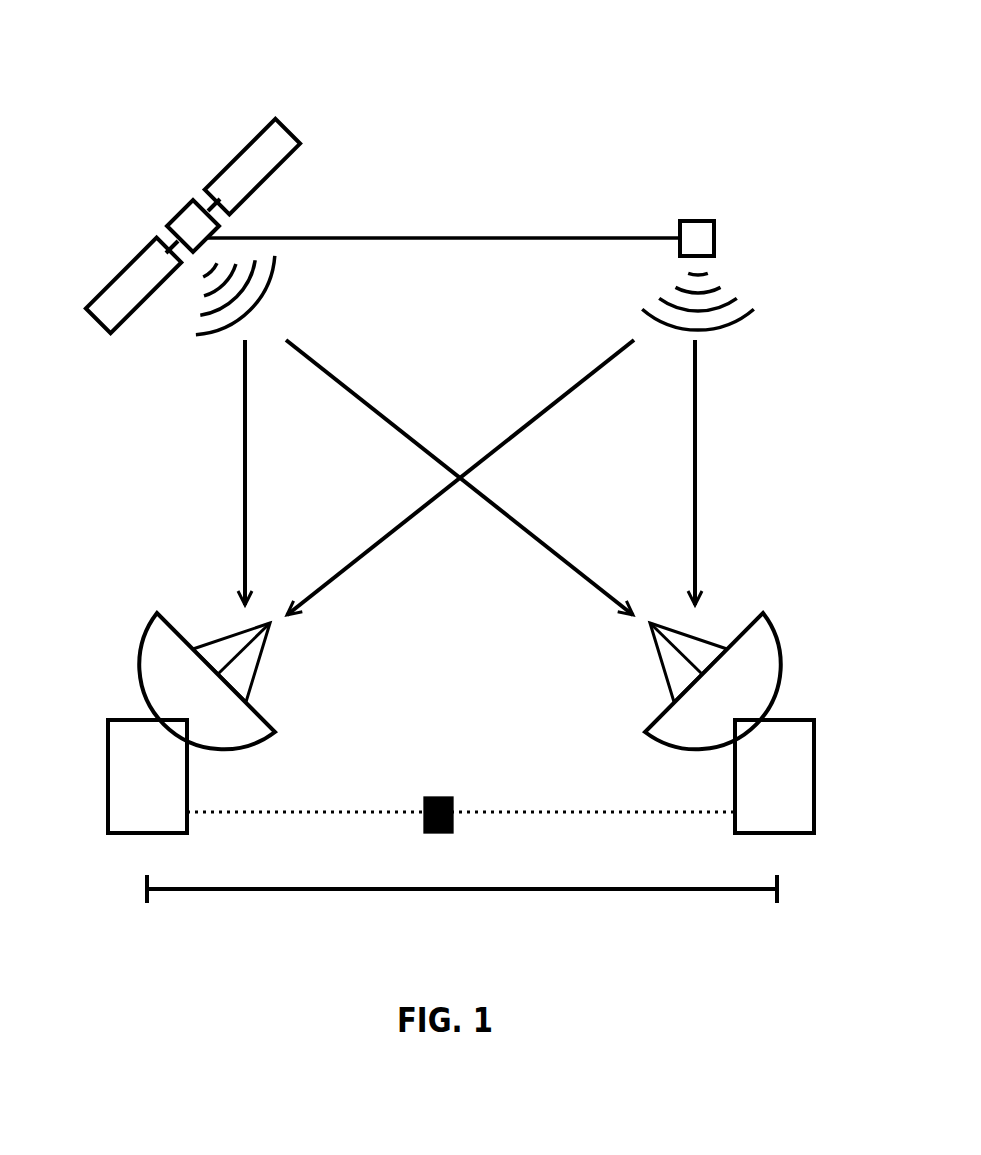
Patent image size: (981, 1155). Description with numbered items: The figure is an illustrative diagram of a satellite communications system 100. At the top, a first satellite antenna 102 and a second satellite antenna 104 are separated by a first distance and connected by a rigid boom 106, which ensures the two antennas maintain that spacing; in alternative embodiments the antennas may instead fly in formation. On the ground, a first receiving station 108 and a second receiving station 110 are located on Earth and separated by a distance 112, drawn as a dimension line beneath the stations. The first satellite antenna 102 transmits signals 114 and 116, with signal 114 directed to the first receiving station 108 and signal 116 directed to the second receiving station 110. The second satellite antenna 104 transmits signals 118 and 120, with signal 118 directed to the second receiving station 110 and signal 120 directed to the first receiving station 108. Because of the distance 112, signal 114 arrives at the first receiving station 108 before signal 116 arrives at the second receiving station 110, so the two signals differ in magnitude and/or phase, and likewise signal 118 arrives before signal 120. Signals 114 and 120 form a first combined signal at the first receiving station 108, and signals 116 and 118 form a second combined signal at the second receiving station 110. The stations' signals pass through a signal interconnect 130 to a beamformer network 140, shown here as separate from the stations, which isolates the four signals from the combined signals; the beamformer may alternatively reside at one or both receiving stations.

The satellite communications system 100 is at (448, 51).
The first satellite antenna 102 is at (178, 212).
The second satellite antenna 104 is at (717, 238).
The boom 106 is at (463, 213).
The first receiving station 108 is at (102, 818).
The second receiving station 110 is at (822, 813).
The distance 112 is at (443, 900).
The signal 114 is at (232, 402).
The signal 116 is at (405, 459).
The signal 118 is at (717, 400).
The signal 120 is at (527, 455).
The signal interconnect 130 is at (543, 802).
The beamformer network 140 is at (422, 831).